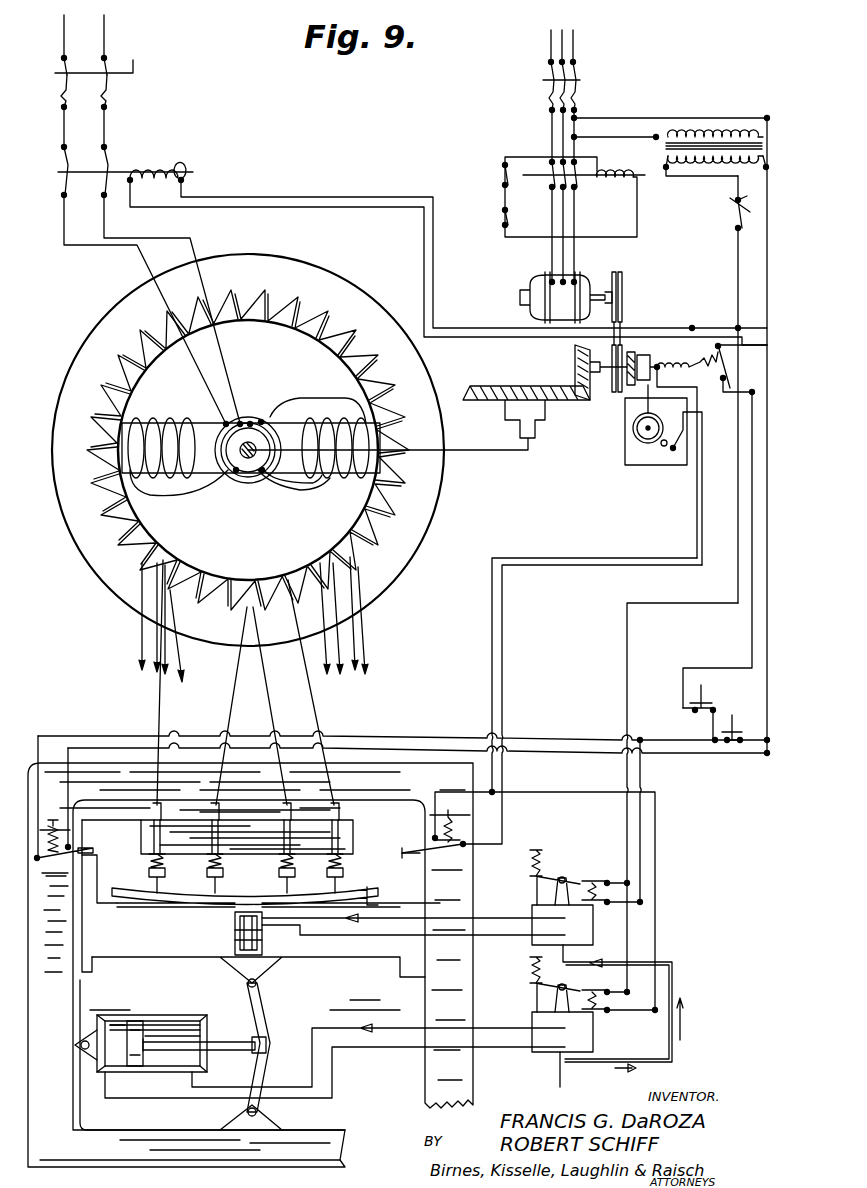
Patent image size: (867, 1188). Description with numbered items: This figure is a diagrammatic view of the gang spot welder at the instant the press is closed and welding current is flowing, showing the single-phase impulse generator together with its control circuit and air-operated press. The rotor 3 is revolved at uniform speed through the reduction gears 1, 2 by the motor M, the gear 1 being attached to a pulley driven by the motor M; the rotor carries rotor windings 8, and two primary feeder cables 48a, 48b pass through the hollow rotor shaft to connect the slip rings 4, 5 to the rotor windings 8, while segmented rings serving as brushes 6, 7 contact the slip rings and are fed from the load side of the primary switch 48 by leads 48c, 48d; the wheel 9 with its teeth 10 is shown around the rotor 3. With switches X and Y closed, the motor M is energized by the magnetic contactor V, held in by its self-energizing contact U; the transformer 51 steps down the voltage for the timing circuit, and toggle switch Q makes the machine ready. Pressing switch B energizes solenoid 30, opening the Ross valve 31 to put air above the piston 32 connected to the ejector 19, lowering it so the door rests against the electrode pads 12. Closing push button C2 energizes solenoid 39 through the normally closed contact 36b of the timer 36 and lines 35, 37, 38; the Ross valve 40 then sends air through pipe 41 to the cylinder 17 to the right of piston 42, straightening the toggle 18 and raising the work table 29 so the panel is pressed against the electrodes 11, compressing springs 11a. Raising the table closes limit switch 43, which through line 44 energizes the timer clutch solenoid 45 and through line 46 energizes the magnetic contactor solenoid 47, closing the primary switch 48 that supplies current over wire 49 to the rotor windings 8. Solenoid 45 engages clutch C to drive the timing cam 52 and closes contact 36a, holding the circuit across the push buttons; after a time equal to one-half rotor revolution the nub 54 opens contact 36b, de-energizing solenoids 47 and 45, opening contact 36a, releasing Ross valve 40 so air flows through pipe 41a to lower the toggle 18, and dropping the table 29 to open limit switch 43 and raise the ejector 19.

The switch X is at (115, 70).
The switch Y is at (585, 70).
The magnetic contactor V is at (550, 170).
The self-energizing contact U is at (533, 185).
The motor M is at (530, 278).
The toggle switch Q is at (732, 212).
The clutch C is at (645, 350).
The push button C2 is at (708, 706).
The switch B is at (741, 728).
The transformer 51 is at (660, 146).
The magnetic contactor solenoid 47 is at (165, 166).
The primary switch 48 is at (58, 182).
The lead to brush 48d is at (110, 238).
The lead to brush 48c is at (120, 248).
The supply wire 49 is at (395, 185).
The line 46 is at (335, 208).
The timer clutch solenoid 45 is at (675, 365).
The timing cam 52 is at (633, 428).
The nub 54 is at (660, 445).
The timer mechanism 36 is at (660, 465).
The normally open contact 36a is at (736, 395).
The normally closed contact 36b is at (680, 450).
The gear 1 is at (575, 360).
The gear 2 is at (510, 390).
The rotor 3 is at (265, 420).
The slip ring 4 is at (252, 420).
The slip ring 5 is at (246, 470).
The brush 6 is at (222, 420).
The brush 7 is at (240, 420).
The rotor windings 8 is at (200, 488).
The rotor wheel 9 is at (52, 498).
The gear teeth 10 is at (110, 522).
The primary feeder cable 48a is at (305, 402).
The primary feeder cable 48b is at (292, 483).
The line 37 is at (490, 618).
The line 44 is at (503, 662).
The line 35 is at (752, 626).
The line 38 is at (550, 796).
The Ross valve 31 is at (548, 880).
The solenoid 30 is at (592, 880).
The limit switch 43 is at (445, 852).
The springs 11a is at (205, 868).
The ejector 19 is at (242, 900).
The electrodes 11 is at (325, 885).
The electrode pads 12 is at (325, 916).
The piston 32 is at (235, 938).
The work table 29 is at (116, 955).
The piston 42 is at (135, 1021).
The cylinder 17 is at (188, 1018).
The toggle 18 is at (268, 1003).
The pipe 41 is at (332, 1022).
The pipe 41a is at (345, 1048).
The solenoid 39 is at (548, 998).
The Ross valve 40 is at (532, 1053).